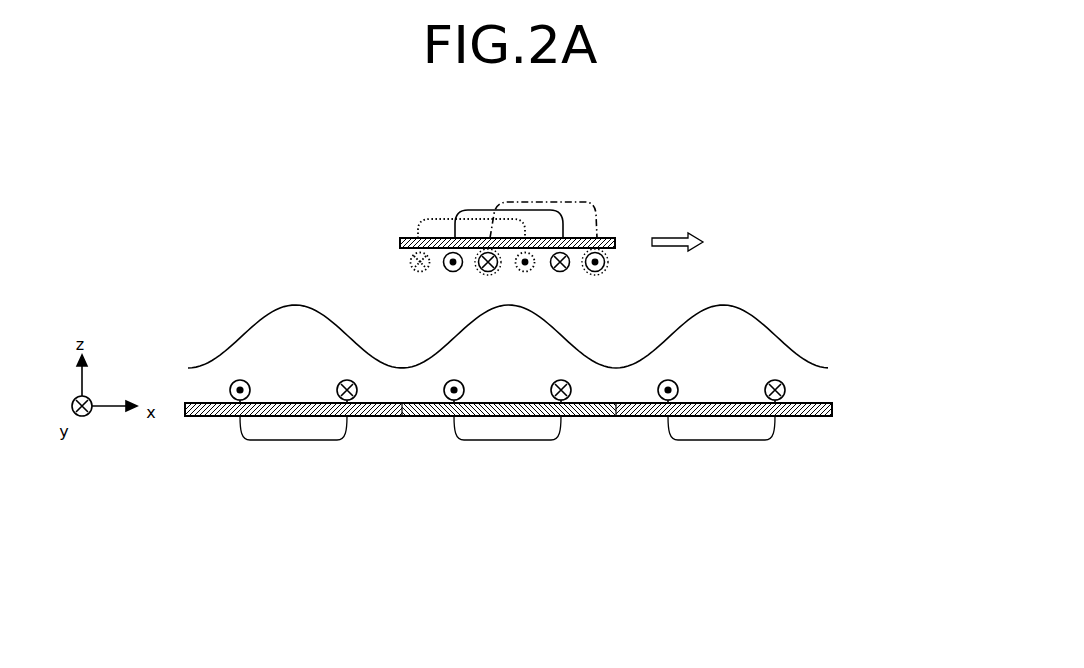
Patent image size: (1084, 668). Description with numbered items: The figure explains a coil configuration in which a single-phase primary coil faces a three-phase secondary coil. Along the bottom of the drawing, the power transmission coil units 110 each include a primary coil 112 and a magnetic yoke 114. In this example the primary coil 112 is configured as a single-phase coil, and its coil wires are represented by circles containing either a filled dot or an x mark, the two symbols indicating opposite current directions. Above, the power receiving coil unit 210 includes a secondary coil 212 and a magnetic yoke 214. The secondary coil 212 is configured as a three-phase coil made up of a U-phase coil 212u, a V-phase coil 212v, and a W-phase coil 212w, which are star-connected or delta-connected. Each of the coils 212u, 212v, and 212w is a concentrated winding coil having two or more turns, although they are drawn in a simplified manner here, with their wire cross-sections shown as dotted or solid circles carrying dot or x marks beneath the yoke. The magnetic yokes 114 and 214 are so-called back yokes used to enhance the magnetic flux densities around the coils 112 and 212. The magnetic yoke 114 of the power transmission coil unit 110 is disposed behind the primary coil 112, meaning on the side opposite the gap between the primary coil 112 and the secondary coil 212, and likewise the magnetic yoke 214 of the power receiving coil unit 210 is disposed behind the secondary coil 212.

The power transmission coil unit 110 is at (857, 380).
The primary coil 112 is at (722, 450).
The magnetic yoke 114 is at (833, 407).
The power receiving coil unit 210 is at (738, 242).
The secondary coil 212 is at (610, 147).
The U-phase coil 212u is at (520, 210).
The V-phase coil 212v is at (440, 219).
The W-phase coil 212w is at (577, 202).
The magnetic yoke 214 is at (400, 243).